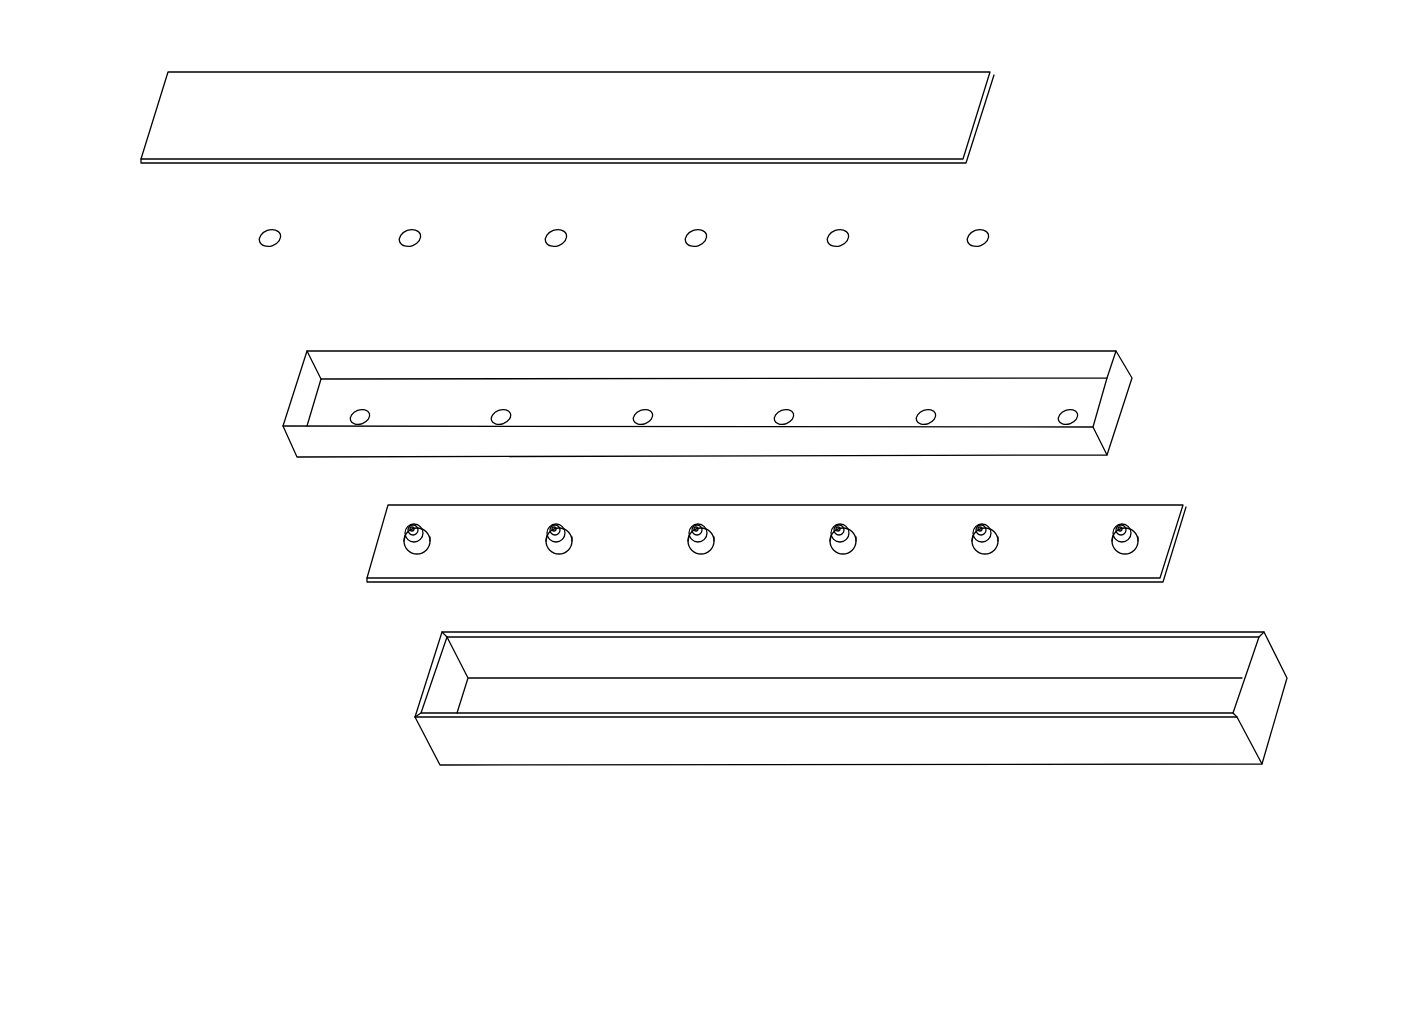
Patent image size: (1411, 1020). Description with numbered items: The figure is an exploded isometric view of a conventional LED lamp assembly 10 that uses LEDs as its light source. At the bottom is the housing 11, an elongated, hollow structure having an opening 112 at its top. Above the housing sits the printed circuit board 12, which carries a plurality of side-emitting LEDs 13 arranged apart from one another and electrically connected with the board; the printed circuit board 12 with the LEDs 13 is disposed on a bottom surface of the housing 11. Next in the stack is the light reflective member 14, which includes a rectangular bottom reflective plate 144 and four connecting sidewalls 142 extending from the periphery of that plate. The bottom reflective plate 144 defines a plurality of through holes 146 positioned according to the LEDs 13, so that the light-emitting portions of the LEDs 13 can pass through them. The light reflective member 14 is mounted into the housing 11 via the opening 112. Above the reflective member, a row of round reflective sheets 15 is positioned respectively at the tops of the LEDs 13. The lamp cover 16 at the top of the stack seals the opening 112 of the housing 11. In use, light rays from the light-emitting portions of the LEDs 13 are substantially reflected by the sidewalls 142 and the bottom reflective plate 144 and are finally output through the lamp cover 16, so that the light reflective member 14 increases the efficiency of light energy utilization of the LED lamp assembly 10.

The LED lamp assembly 10 is at (1067, 42).
The housing 11 is at (883, 675).
The opening 112 is at (1185, 660).
The printed circuit board 12 is at (1153, 538).
The side-emitting LEDs 13 is at (1136, 532).
The light reflective member 14 is at (762, 370).
The connecting sidewalls 142 is at (820, 370).
The bottom reflective plate 144 is at (1032, 395).
The through holes 146 is at (924, 415).
The round reflective sheets 15 is at (980, 236).
The lamp cover 16 is at (963, 93).